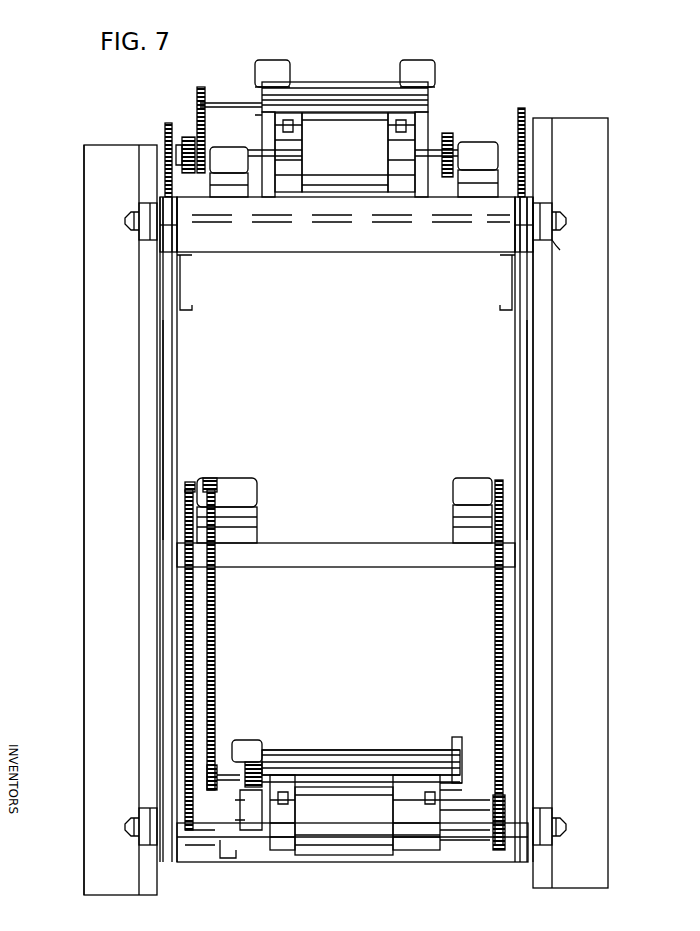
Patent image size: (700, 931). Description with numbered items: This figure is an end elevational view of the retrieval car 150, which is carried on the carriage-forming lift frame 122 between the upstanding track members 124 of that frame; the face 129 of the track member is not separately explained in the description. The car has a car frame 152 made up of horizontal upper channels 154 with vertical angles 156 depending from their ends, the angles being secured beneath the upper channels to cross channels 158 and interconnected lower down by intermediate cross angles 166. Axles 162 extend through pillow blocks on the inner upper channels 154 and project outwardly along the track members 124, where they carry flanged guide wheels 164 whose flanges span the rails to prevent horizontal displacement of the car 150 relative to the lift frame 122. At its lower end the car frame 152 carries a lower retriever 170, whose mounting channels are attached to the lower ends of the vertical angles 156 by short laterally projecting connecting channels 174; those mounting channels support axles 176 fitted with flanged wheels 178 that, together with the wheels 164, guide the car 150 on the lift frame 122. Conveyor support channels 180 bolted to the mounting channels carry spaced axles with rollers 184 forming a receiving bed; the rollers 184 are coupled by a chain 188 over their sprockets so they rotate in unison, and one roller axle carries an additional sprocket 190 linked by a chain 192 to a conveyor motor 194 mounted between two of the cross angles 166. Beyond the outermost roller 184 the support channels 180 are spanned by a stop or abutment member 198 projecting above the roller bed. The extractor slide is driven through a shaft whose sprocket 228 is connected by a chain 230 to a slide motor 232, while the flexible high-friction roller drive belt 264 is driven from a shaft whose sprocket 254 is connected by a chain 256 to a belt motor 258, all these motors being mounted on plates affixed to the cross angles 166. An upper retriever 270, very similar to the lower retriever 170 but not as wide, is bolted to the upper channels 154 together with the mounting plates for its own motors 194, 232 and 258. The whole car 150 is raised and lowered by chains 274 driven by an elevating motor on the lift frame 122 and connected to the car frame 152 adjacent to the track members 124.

The lift frame 122 is at (76, 354).
The upstanding track members 124 is at (608, 380).
The post outer face 129 is at (84, 450).
The retrieval car 150 is at (462, 88).
The car frame 152 is at (500, 348).
The horizontal upper channels 154 is at (374, 243).
The vertical angles 156 is at (178, 376).
The cross channels 158 is at (192, 287).
The axles 162 is at (560, 220).
The flanged guide wheels 164 is at (134, 242).
The intermediate cross angles 166 is at (374, 560).
The lower retriever 170 is at (420, 724).
The connecting channels 174 is at (224, 862).
The axles 176 is at (422, 842).
The flanged wheels 178 is at (138, 820).
The conveyor support channels 180 is at (462, 746).
The rollers 184 is at (336, 772).
The chain 188 is at (266, 764).
The additional sprocket 190 is at (222, 748).
The chain 192 is at (216, 627).
The conveyor motor 194 is at (232, 166).
The stop or abutment member 198 is at (380, 752).
The sprocket 228 is at (198, 828).
The chain 230 is at (184, 596).
The slide motor 232 is at (212, 478).
The sprocket 254 is at (500, 850).
The chain 256 is at (494, 612).
The belt motor 258 is at (480, 150).
The roller drive belt 264 is at (362, 159).
The upper retriever 270 is at (351, 68).
The chains 274 is at (163, 130).